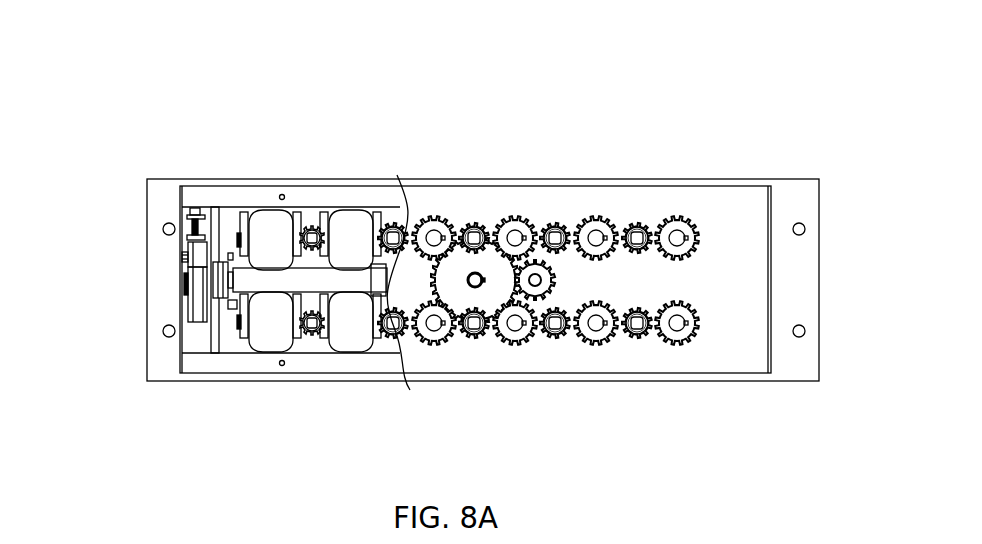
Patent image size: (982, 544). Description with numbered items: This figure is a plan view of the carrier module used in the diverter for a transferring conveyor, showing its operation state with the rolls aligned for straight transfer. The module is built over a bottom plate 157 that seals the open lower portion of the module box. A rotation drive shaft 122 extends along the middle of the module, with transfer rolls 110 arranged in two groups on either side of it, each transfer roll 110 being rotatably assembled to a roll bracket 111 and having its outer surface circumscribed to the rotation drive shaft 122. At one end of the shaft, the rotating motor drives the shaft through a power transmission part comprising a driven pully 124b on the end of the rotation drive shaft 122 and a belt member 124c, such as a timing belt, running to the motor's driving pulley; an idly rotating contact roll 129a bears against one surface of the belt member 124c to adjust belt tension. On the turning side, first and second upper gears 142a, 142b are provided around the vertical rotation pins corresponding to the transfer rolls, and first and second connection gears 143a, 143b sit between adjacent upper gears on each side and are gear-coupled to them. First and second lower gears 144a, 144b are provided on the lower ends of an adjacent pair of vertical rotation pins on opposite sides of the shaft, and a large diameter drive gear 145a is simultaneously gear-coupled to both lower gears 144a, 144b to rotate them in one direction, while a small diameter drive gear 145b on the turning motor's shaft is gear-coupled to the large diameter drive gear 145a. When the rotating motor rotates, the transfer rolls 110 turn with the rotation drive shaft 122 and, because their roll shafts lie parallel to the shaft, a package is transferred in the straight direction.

The bottom plate 157 is at (785, 179).
The roll bracket 111 is at (240, 221).
The transfer roll 110 is at (270, 221).
The rotation drive shaft 122 is at (357, 280).
The contact roll 129a is at (197, 253).
The driven pully 124b is at (188, 277).
The belt member 124c is at (197, 290).
The first lower gear 144a is at (437, 217).
The second lower gear 144b is at (433, 353).
The large diameter drive gear 145a is at (502, 273).
The small diameter drive gear 145b is at (538, 260).
The first connection gear 143a is at (637, 227).
The second connection gear 143b is at (635, 337).
The first upper gear 142a is at (683, 212).
The second upper gear 142b is at (682, 350).